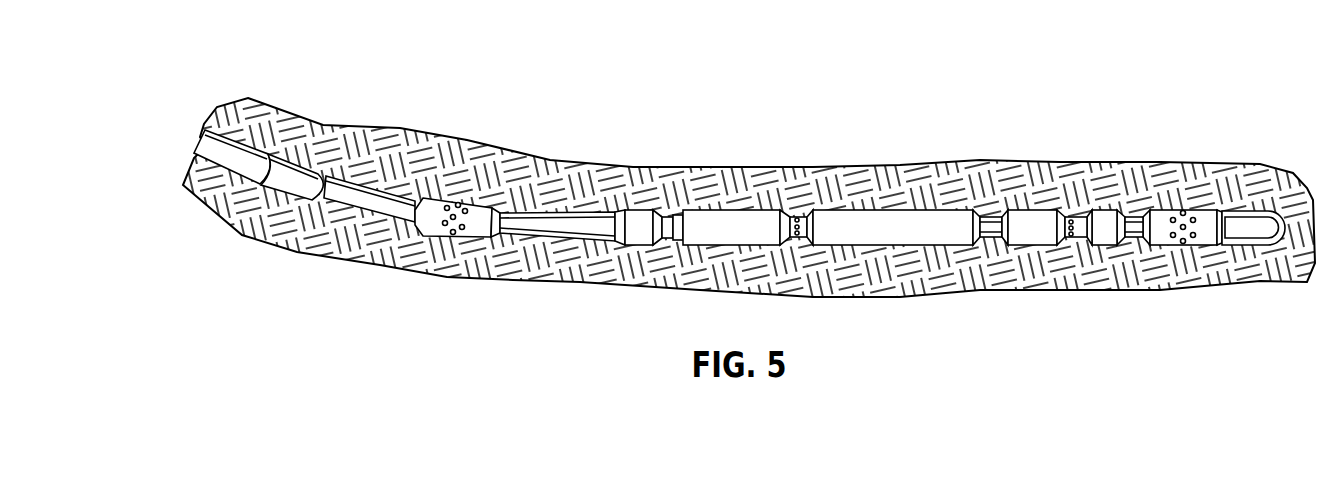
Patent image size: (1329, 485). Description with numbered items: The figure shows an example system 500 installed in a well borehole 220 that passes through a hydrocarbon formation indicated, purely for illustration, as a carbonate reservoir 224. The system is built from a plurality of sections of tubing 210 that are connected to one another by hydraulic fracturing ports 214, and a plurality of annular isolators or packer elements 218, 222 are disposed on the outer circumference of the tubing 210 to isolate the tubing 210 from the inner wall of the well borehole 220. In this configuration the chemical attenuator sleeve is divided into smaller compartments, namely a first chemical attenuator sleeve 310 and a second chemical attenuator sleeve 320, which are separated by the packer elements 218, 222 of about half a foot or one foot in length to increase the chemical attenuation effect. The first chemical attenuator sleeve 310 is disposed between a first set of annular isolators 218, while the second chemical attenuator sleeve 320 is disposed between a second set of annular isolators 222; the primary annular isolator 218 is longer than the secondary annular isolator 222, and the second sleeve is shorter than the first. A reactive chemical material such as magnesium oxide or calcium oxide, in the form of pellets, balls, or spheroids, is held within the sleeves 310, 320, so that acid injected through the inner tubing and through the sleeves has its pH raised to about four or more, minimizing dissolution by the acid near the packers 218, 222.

The system 500 is at (749, 180).
The carbonate reservoir 224 is at (415, 138).
The tubing 210 is at (380, 213).
The hydraulic fracturing ports 214 is at (433, 217).
The well borehole 220 is at (563, 217).
The secondary annular isolator 222 is at (643, 217).
The first chemical attenuator sleeve 310 is at (733, 217).
The primary annular isolator 218 is at (910, 213).
The second chemical attenuator sleeve 320 is at (998, 217).